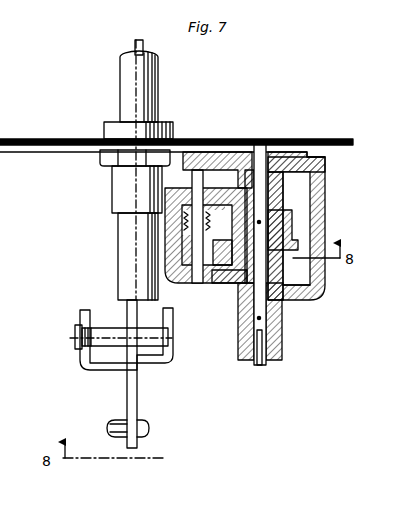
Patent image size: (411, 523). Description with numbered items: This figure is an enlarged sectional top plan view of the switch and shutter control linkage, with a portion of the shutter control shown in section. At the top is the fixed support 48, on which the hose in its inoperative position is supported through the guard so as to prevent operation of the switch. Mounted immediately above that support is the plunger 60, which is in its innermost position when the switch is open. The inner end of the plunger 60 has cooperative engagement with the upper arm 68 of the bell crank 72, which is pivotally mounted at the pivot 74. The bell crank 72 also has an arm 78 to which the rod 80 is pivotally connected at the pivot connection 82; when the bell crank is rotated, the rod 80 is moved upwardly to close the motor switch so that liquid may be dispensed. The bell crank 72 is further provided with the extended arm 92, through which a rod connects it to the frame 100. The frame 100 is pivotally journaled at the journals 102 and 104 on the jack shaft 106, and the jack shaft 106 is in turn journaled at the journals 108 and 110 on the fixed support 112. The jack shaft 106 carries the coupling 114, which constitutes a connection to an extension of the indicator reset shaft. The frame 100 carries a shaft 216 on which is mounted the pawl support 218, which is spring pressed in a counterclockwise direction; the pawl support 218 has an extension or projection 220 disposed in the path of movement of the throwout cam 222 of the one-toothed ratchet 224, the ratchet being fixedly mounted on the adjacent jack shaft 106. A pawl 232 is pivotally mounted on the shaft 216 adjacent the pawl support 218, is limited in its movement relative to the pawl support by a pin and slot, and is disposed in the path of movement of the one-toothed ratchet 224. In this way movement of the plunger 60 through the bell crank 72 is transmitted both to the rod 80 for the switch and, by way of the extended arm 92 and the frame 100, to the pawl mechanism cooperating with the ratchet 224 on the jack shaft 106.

The fixed support 48 is at (134, 47).
The plunger 60 is at (124, 84).
The upper arm 68 is at (127, 312).
The bell crank 72 is at (98, 371).
The pivot 74 is at (78, 336).
The arm 78 is at (138, 389).
The rod 80 is at (112, 426).
The pivot connection 82 is at (150, 430).
The extended arm 92 is at (172, 330).
The frame 100 is at (178, 182).
The journal 102 is at (284, 194).
The journal 104 is at (324, 304).
The jack shaft 106 is at (272, 146).
The journal 108 is at (300, 152).
The journal 110 is at (282, 316).
The fixed support 112 is at (322, 292).
The coupling 114 is at (277, 362).
The shaft 216 is at (201, 192).
The pawl support 218 is at (226, 207).
The extension or projection 220 is at (248, 198).
The throwout cam 222 is at (292, 220).
The one-toothed ratchet 224 is at (298, 245).
The pawl 232 is at (219, 284).